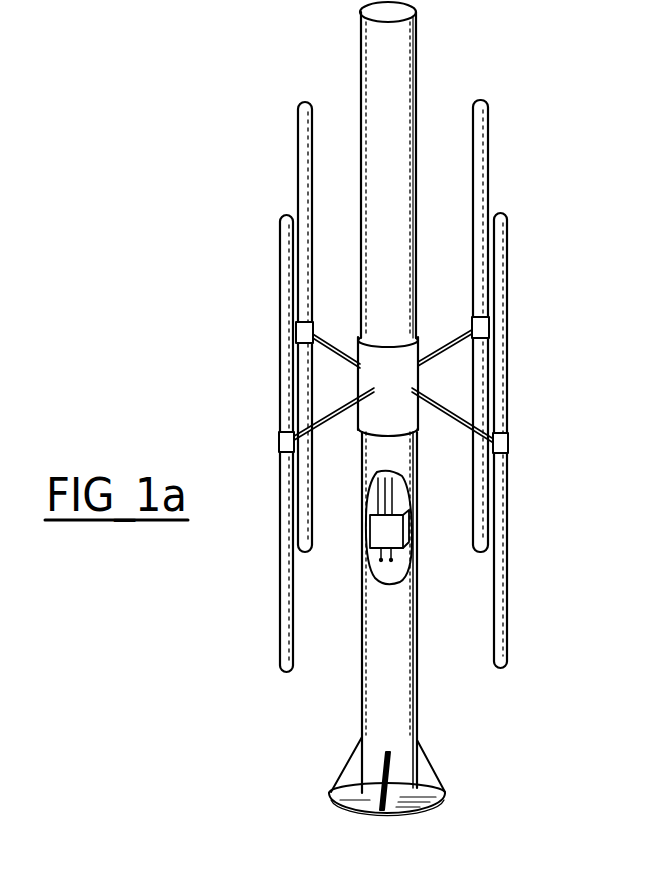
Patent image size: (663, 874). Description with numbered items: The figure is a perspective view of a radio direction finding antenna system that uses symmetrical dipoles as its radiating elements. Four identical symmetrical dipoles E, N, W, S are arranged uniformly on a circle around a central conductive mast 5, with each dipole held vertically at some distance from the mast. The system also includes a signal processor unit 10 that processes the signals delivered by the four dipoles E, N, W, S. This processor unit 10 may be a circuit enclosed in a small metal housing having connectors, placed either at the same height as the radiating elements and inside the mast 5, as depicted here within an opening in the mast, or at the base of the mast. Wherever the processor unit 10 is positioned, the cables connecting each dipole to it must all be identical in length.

The central conductive mast 5 is at (409, 65).
The symmetrical dipole N is at (298, 158).
The symmetrical dipole E is at (486, 150).
The symmetrical dipole W is at (282, 332).
The symmetrical dipole S is at (508, 315).
The signal processor unit 10 is at (413, 572).